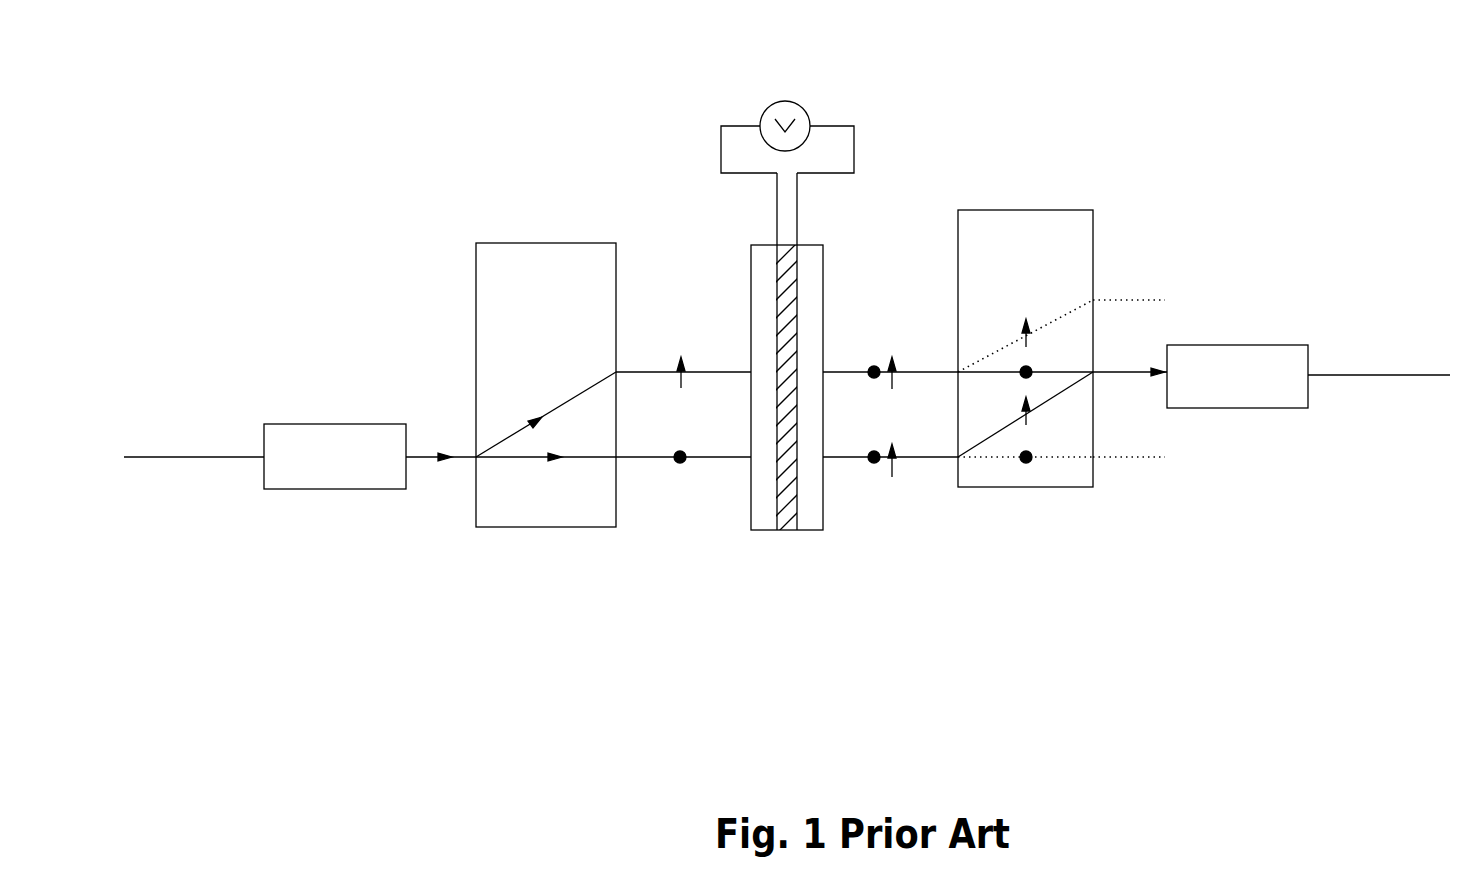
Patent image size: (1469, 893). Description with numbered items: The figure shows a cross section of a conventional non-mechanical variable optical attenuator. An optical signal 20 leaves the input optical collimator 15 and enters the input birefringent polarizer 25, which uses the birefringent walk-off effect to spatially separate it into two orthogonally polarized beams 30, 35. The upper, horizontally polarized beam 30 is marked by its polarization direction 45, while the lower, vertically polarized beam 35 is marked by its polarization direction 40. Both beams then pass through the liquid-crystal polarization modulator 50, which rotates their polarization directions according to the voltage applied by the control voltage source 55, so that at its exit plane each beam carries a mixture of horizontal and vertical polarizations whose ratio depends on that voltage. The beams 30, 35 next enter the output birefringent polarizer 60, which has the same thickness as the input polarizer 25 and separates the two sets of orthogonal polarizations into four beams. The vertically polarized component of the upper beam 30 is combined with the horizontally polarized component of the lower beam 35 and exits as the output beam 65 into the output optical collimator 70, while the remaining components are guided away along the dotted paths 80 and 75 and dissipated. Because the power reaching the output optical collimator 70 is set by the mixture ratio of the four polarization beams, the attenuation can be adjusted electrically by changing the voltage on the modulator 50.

The input optical collimator 15 is at (331, 470).
The optical signal 20 is at (435, 472).
The input birefringent polarizer 25 is at (541, 272).
The horizontally polarized beam 30 is at (519, 445).
The vertically polarized beam 35 is at (583, 472).
The polarization direction 40 is at (680, 477).
The polarization direction 45 is at (681, 337).
The liquid-crystal polarization modulator 50 is at (786, 545).
The control voltage source 55 is at (785, 85).
The output birefringent polarizer 60 is at (1033, 232).
The combined output beam 65 is at (1128, 386).
The output optical collimator 70 is at (1263, 390).
The rejected lower output 75 is at (1128, 470).
The rejected upper output 80 is at (1128, 286).